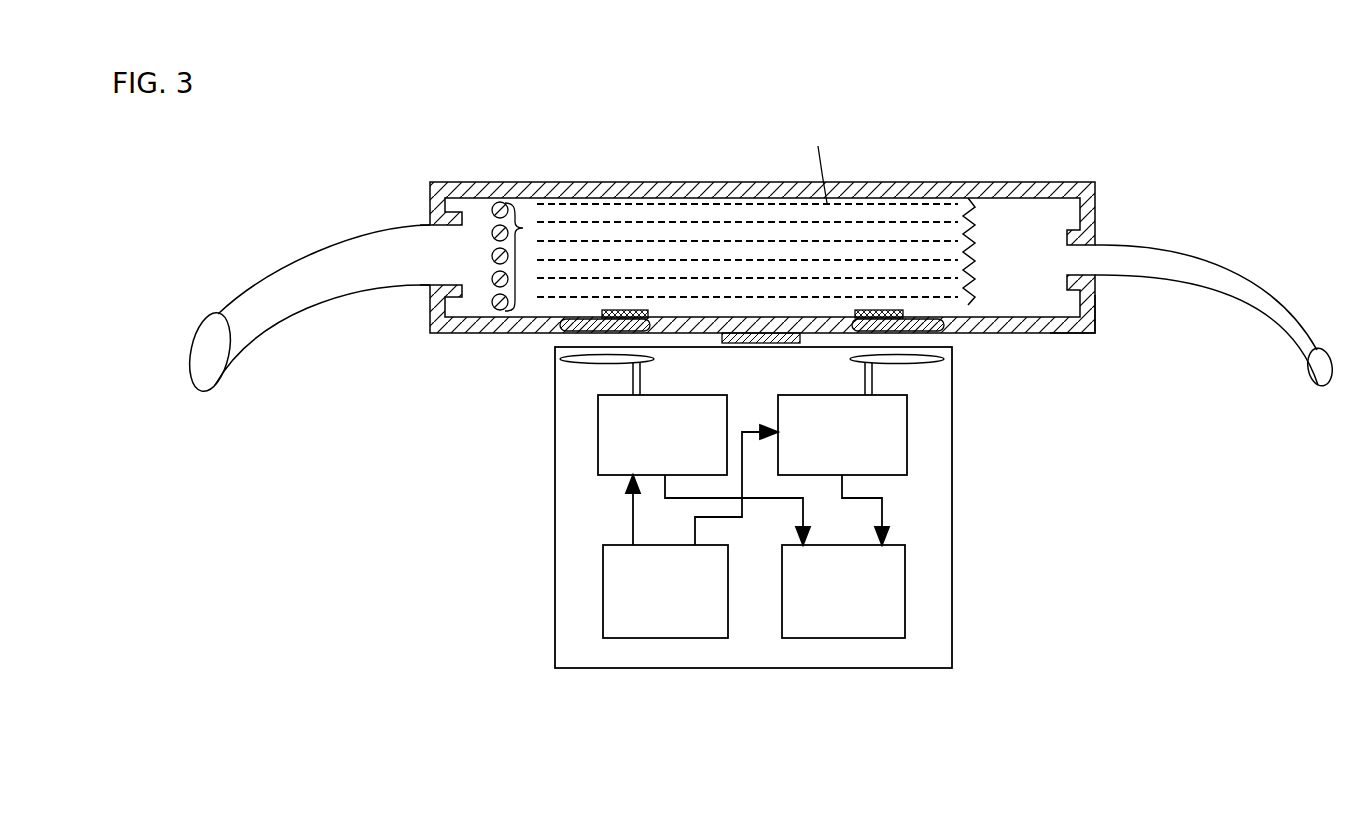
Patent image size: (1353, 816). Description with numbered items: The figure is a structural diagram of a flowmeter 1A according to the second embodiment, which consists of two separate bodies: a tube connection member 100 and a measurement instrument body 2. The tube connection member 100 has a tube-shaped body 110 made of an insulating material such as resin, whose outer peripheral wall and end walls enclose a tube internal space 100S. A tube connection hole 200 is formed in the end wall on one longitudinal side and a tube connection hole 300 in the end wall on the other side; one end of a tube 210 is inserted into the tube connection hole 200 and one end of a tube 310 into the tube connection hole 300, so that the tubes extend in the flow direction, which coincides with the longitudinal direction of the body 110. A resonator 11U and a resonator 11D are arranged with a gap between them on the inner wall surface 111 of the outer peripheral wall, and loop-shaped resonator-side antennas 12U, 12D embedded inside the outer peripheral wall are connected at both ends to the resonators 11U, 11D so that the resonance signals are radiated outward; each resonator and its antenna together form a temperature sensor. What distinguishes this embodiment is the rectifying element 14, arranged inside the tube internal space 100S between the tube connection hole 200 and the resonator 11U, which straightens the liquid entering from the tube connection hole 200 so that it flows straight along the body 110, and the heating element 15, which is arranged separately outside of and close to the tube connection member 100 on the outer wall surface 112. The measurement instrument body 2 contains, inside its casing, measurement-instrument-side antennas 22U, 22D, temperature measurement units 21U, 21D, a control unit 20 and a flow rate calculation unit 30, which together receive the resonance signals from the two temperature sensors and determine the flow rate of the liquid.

The flowmeter 1A is at (1165, 533).
The measurement instrument body 2 is at (952, 645).
The rectifying element 14 is at (523, 228).
The heating element 15 is at (745, 333).
The control unit 20 is at (637, 638).
The flow rate calculation unit 30 is at (883, 638).
The temperature measurement unit 21U is at (598, 457).
The temperature measurement unit 21D is at (907, 458).
The measurement-instrument-side antenna 22U is at (547, 372).
The measurement-instrument-side antenna 22D is at (952, 379).
The resonator 11U is at (538, 332).
The resonator 11D is at (966, 332).
The resonator-side antenna 12U is at (600, 313).
The resonator-side antenna 12D is at (905, 318).
The tube connection member 100 is at (1030, 169).
The tube internal space 100S is at (986, 195).
The body 110 is at (890, 183).
The inner wall surface 111 is at (1069, 306).
The outer wall surface 112 is at (1098, 350).
The tube connection hole 200 is at (415, 203).
The tube 210 is at (279, 250).
The tube connection hole 300 is at (1110, 229).
The tube 310 is at (1222, 254).